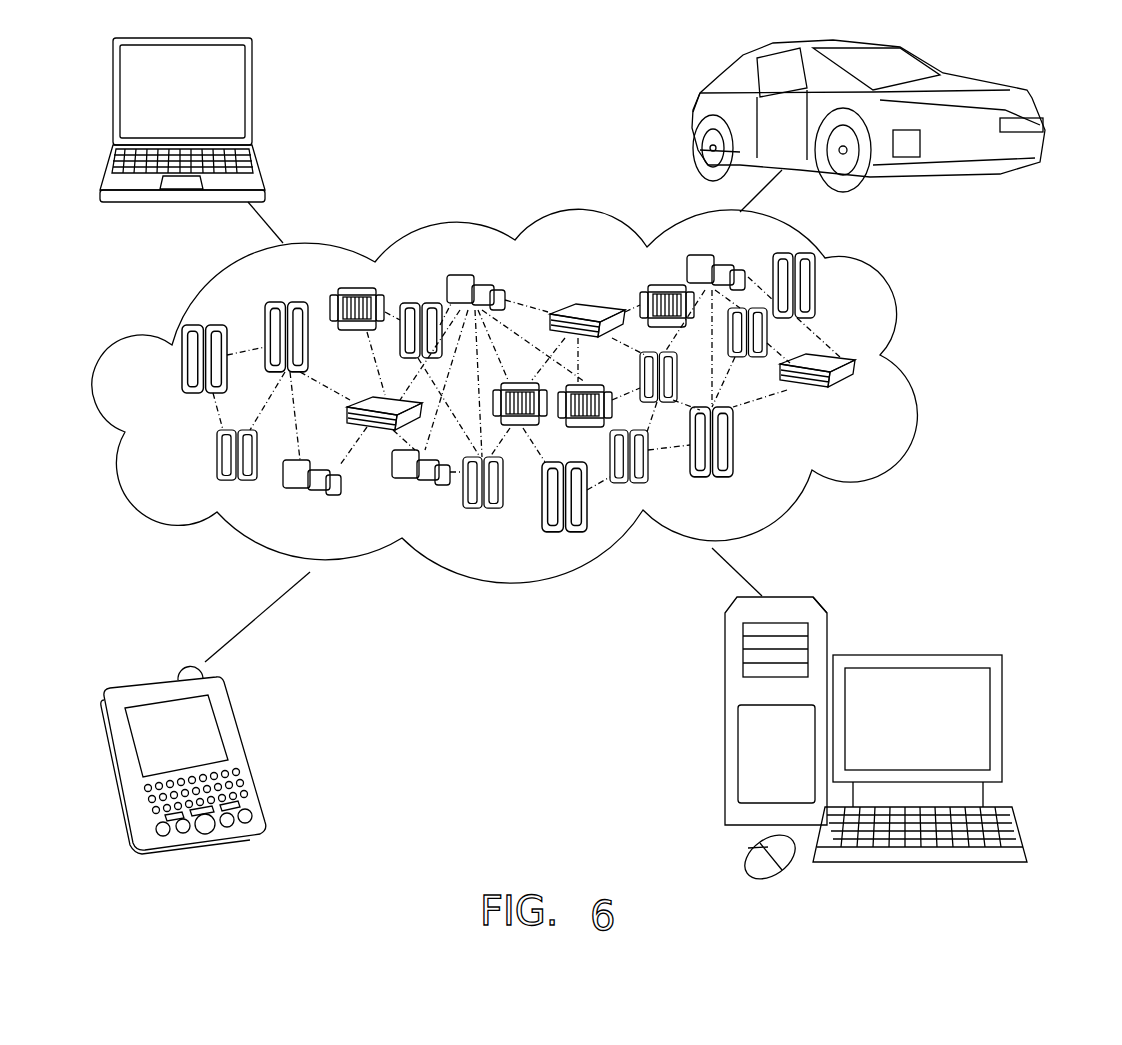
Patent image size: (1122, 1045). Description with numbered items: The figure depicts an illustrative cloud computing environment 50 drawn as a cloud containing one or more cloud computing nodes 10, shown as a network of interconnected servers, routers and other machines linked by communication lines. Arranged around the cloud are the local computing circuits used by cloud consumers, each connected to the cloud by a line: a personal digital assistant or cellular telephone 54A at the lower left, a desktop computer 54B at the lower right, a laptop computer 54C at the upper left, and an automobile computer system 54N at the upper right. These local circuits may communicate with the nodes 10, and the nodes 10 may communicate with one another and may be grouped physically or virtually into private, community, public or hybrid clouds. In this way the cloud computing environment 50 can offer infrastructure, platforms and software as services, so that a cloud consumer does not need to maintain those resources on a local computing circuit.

The cloud computing nodes 10 is at (907, 423).
The cloud computing environment 50 is at (918, 367).
The personal digital assistant (PDA) or cellular telephone 54A is at (242, 748).
The desktop computer 54B is at (913, 653).
The laptop computer 54C is at (252, 100).
The automobile computer system 54N is at (694, 116).